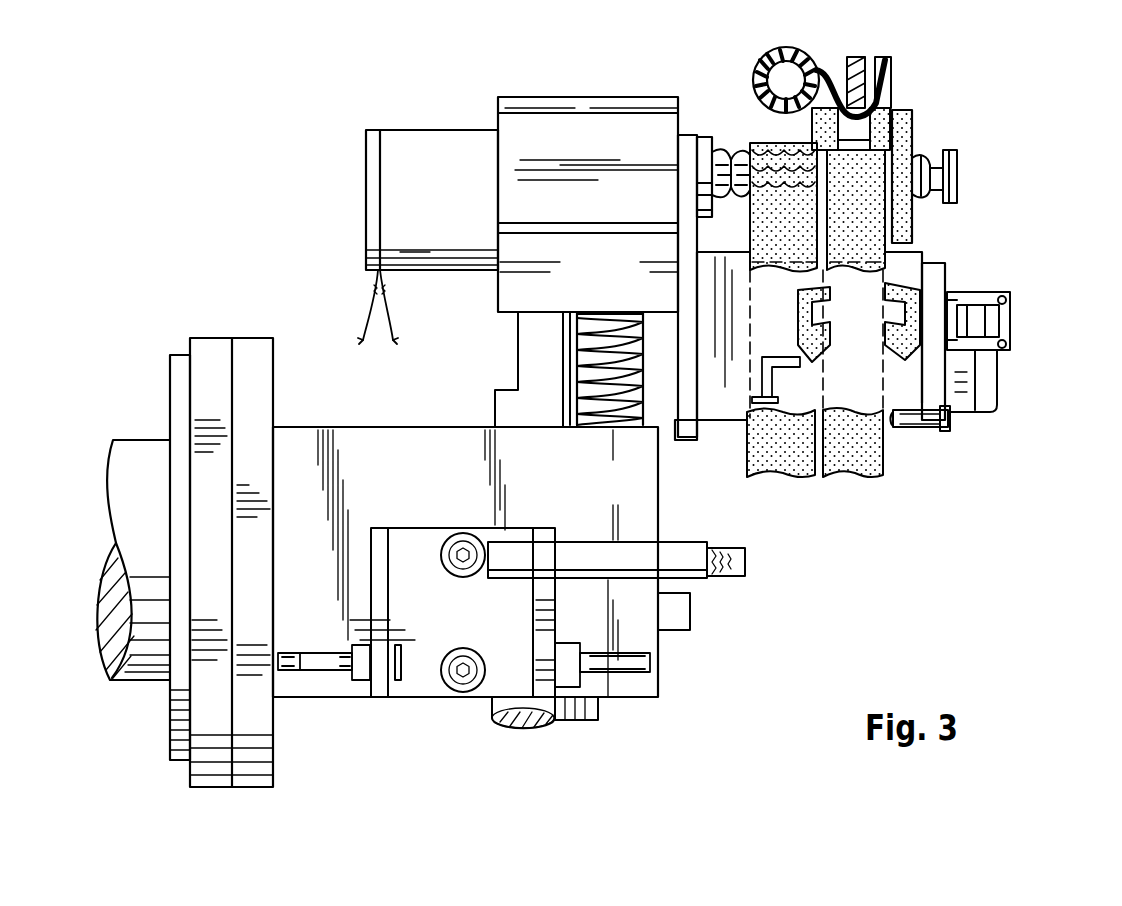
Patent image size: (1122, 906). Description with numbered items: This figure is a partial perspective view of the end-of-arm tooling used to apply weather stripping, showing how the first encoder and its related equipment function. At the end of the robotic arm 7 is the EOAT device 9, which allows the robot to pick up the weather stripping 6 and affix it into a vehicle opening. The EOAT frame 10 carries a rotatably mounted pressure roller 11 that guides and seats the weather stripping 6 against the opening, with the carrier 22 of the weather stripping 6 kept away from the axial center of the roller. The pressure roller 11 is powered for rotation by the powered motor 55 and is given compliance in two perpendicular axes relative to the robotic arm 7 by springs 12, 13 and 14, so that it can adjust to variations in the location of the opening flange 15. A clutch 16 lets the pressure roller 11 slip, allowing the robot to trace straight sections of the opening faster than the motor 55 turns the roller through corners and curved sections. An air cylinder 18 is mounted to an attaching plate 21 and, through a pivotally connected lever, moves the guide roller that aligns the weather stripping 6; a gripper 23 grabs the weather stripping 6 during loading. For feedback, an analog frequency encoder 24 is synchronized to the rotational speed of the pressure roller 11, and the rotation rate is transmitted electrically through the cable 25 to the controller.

The weather stripping 6 is at (752, 72).
The robotic arm 7 is at (127, 457).
The EOAT device 9 is at (304, 708).
The EOAT frame 10 is at (330, 698).
The pressure roller 11 is at (900, 138).
The spring 12 is at (560, 360).
The spring 13 is at (745, 150).
The spring 14 is at (930, 200).
The opening flange 15 is at (858, 56).
The clutch 16 is at (530, 97).
The air cylinder 18 is at (1010, 322).
The attaching plate 21 is at (945, 262).
The carrier 22 is at (890, 75).
The gripper 23 is at (852, 378).
The analog frequency encoder 24 is at (408, 130).
The cable 25 is at (368, 306).
The powered motor 55 is at (603, 707).